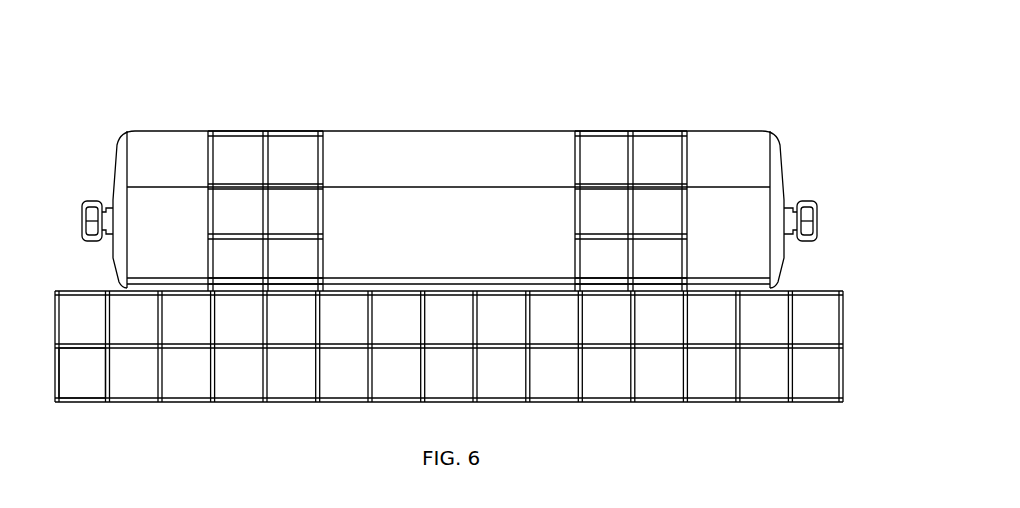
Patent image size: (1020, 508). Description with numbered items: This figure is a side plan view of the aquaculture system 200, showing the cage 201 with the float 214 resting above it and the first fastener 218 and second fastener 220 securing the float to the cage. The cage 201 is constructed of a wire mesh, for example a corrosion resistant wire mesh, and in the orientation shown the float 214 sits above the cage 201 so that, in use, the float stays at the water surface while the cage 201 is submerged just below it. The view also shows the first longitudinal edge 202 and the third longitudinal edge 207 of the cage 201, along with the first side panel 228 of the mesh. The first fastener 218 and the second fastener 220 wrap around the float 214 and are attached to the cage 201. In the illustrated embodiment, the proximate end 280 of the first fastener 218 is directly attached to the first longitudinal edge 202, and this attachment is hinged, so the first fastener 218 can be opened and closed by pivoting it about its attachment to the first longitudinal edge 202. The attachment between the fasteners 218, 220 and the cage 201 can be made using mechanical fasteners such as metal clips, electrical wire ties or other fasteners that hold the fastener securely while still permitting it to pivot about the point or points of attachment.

The aquaculture system 200 is at (580, 62).
The first float 214 is at (743, 127).
The first fastener 218 is at (270, 132).
The second fastener 220 is at (610, 134).
The proximate end 280 is at (240, 296).
The first longitudinal edge 202 is at (818, 294).
The first side panel 228 is at (820, 350).
The third longitudinal edge 207 is at (758, 403).
The cage 201 is at (87, 384).